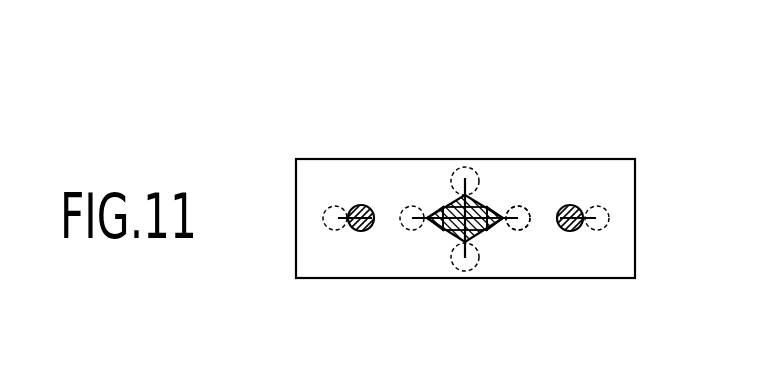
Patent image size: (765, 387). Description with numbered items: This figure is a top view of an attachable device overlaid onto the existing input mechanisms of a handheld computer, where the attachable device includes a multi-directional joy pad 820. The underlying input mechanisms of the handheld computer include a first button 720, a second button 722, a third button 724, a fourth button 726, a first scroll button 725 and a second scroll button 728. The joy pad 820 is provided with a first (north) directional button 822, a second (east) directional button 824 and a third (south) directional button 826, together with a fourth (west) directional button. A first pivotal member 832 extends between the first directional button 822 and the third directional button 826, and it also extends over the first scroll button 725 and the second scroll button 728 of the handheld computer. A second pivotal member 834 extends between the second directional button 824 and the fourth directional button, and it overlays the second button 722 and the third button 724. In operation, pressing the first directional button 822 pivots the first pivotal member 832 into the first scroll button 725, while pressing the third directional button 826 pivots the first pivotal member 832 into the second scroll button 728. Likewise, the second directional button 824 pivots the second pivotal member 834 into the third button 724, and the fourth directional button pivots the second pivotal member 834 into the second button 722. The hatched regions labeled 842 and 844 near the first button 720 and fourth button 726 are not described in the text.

The first button 720 is at (337, 206).
The second button 722 is at (412, 231).
The third button 724 is at (527, 228).
The first scroll button 725 is at (460, 167).
The fourth button 726 is at (595, 206).
The second scroll button 728 is at (457, 269).
The joy pad 820 is at (445, 232).
The first directional button 822 is at (485, 194).
The second directional button 824 is at (516, 206).
The third directional button 826 is at (482, 232).
The first pivotal member 832 is at (452, 188).
The second pivotal member 834 is at (503, 228).
The left hatched pad 842 is at (367, 205).
The right hatched pad 844 is at (565, 205).